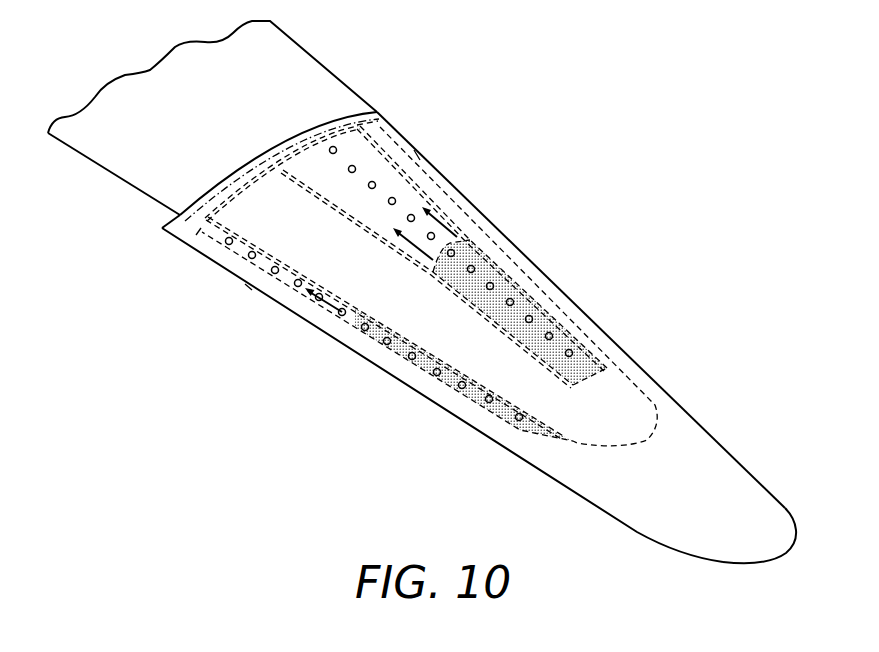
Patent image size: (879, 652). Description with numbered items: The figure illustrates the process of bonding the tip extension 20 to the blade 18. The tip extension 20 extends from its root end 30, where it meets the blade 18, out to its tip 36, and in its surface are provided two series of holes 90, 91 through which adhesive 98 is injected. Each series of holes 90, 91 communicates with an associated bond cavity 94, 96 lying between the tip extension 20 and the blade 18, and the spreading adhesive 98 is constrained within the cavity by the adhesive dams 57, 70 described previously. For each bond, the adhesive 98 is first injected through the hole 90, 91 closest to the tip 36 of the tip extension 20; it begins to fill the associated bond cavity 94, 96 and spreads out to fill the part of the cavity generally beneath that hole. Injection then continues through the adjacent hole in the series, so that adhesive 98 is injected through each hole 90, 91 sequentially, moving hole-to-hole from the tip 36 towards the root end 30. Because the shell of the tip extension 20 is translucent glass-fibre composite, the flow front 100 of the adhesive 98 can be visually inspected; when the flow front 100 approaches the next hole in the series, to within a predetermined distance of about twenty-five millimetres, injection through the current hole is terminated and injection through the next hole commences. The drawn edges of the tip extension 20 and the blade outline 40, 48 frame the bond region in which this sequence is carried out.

The blade 18 is at (187, 52).
The tip extension 20 is at (732, 350).
The root end 30 is at (275, 142).
The tip 36 is at (773, 549).
The trailing edge 40 is at (637, 532).
The outboard leading edge 48 is at (749, 482).
The adhesive dam 57 is at (250, 287).
The adhesive dam 70 is at (428, 153).
The hole 90 is at (568, 352).
The hole 91 is at (519, 418).
The bond cavity 94 is at (315, 153).
The bond cavity 96 is at (192, 237).
The adhesive 98 is at (627, 348).
The flow front 100 is at (490, 210).